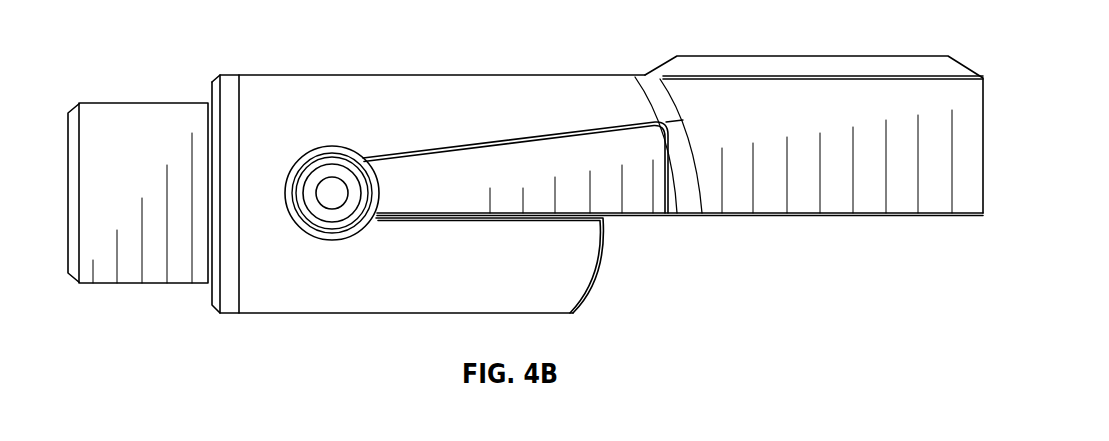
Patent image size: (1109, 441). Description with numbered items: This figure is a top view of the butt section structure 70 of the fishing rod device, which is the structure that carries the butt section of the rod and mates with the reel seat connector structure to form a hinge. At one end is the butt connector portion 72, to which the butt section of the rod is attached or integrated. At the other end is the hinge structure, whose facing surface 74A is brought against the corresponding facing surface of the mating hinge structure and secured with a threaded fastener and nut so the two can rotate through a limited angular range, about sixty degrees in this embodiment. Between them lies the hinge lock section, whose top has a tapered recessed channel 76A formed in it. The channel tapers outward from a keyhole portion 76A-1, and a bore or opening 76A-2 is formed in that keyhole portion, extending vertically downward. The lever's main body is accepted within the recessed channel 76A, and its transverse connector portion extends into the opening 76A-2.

The butt section structure 70 is at (411, 38).
The butt connector portion 72 is at (145, 103).
The facing surface 74A is at (832, 216).
The tapered recessed channel 76A is at (432, 202).
The keyhole portion 76A-1 is at (330, 152).
The bore or opening 76A-2 is at (332, 196).